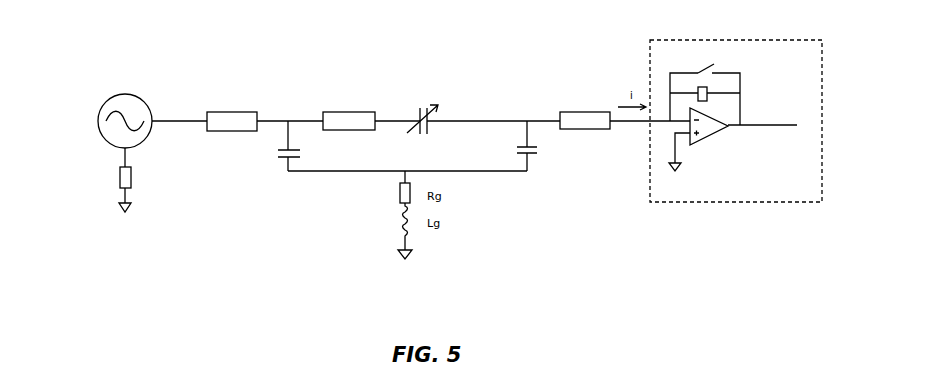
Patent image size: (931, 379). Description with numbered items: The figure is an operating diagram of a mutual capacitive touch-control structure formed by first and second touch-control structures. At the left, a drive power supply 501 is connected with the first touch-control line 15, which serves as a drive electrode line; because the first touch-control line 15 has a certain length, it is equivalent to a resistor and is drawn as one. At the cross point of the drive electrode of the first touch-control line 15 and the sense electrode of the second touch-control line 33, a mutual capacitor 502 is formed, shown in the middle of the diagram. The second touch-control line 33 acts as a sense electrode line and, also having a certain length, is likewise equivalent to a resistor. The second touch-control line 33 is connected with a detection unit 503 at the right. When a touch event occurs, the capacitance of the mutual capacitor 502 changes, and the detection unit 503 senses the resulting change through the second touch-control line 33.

The drive power supply 501 is at (95, 112).
The first touch-control line 15 is at (230, 112).
The mutual capacitor 502 is at (417, 115).
The second touch-control line 33 is at (580, 112).
The detection unit 503 is at (688, 210).